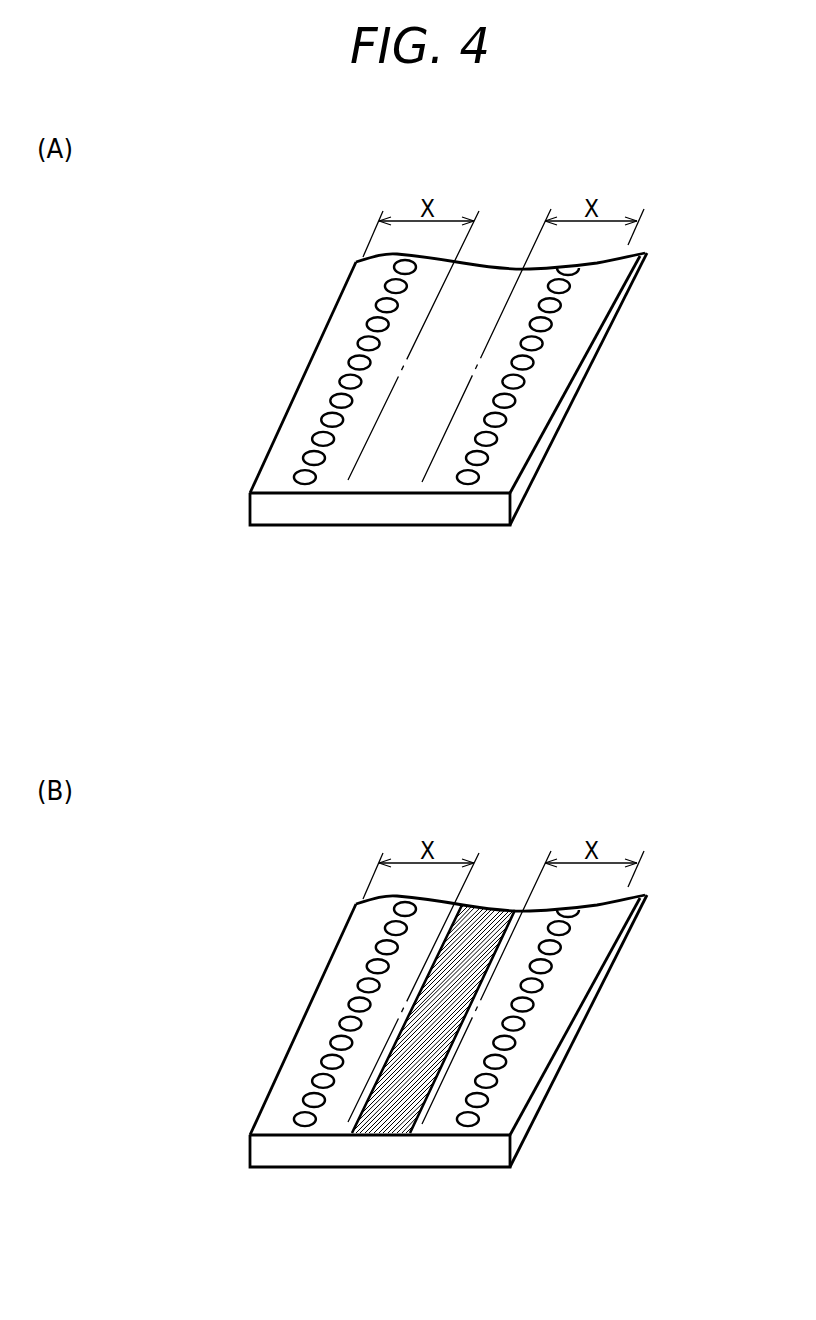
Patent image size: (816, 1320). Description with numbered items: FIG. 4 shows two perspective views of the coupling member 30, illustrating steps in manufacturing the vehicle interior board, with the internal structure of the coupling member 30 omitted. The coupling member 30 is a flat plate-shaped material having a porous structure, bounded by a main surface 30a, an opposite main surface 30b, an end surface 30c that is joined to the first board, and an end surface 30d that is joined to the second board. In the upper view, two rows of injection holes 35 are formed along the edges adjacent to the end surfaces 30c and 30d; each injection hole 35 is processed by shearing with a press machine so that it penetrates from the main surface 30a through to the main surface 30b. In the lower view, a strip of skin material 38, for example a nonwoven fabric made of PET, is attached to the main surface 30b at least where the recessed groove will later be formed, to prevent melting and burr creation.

The coupling member 30 is at (403, 703).
The main surface 30a is at (374, 478).
The main surface 30b is at (333, 373).
The end surface 30c is at (583, 710).
The end surface 30d is at (254, 702).
The injection hole 35 is at (428, 693).
The skin material 38 is at (477, 940).